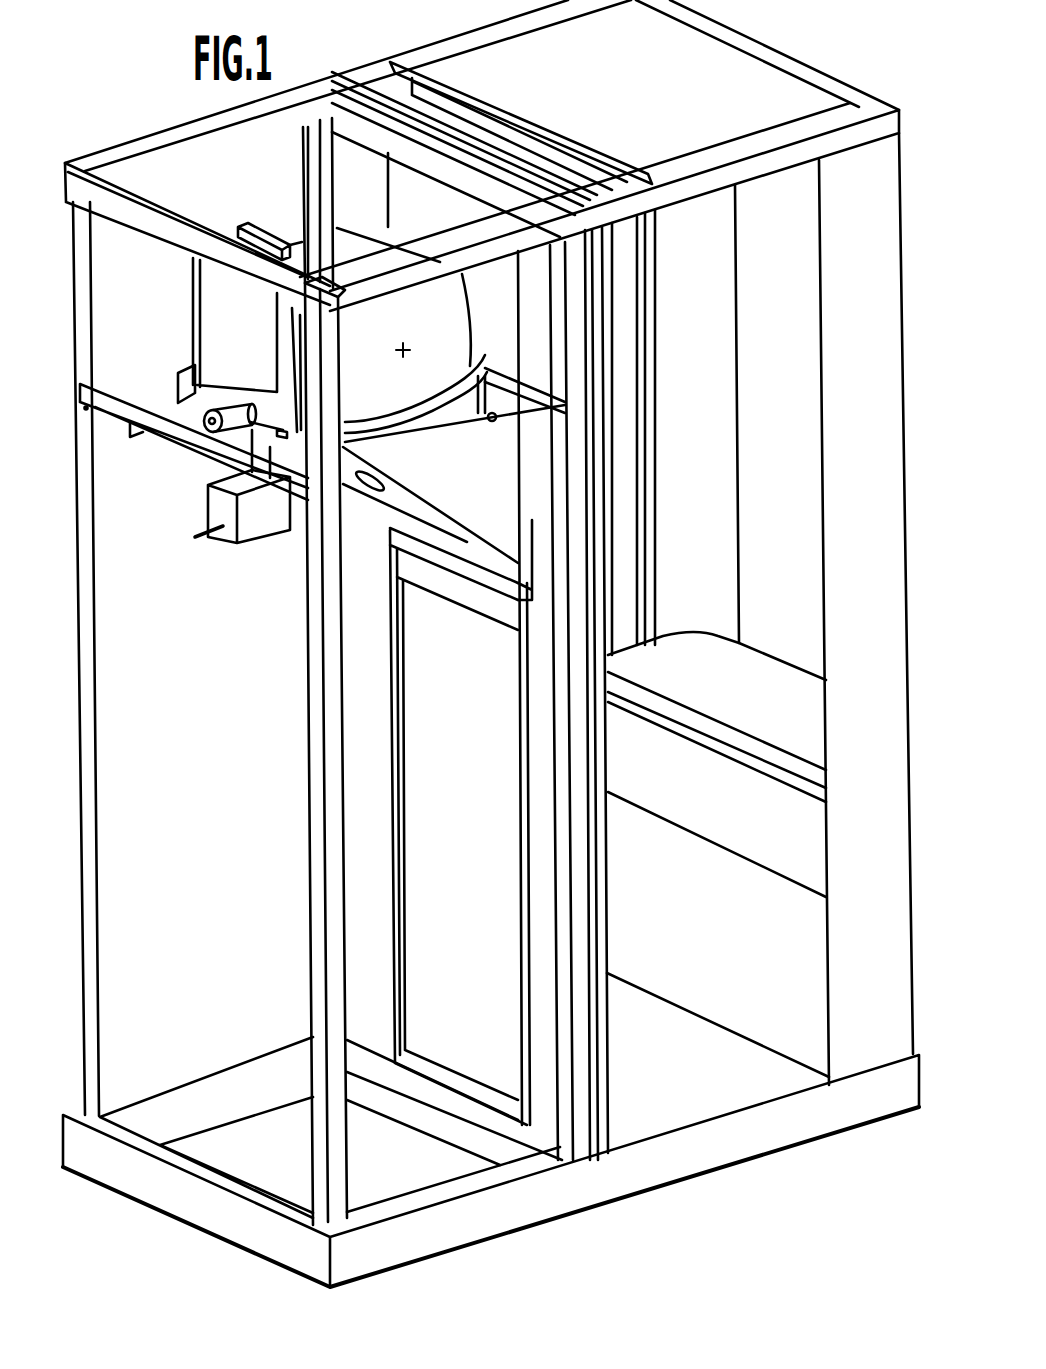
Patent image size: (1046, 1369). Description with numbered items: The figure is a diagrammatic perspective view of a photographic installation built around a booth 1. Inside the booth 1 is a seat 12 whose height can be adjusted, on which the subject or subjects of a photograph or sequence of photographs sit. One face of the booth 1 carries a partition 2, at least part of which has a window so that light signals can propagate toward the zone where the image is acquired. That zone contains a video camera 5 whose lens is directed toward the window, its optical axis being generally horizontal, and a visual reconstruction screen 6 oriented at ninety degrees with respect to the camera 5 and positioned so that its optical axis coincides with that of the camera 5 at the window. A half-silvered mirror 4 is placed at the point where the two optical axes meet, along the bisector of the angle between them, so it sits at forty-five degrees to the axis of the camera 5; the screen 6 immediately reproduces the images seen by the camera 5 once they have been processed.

The booth 1 is at (710, 1090).
The partition 2 is at (492, 995).
The half-silvered mirror 4 is at (472, 550).
The video camera 5 is at (256, 527).
The visual reconstruction screen 6 is at (422, 365).
The seat 12 is at (759, 710).